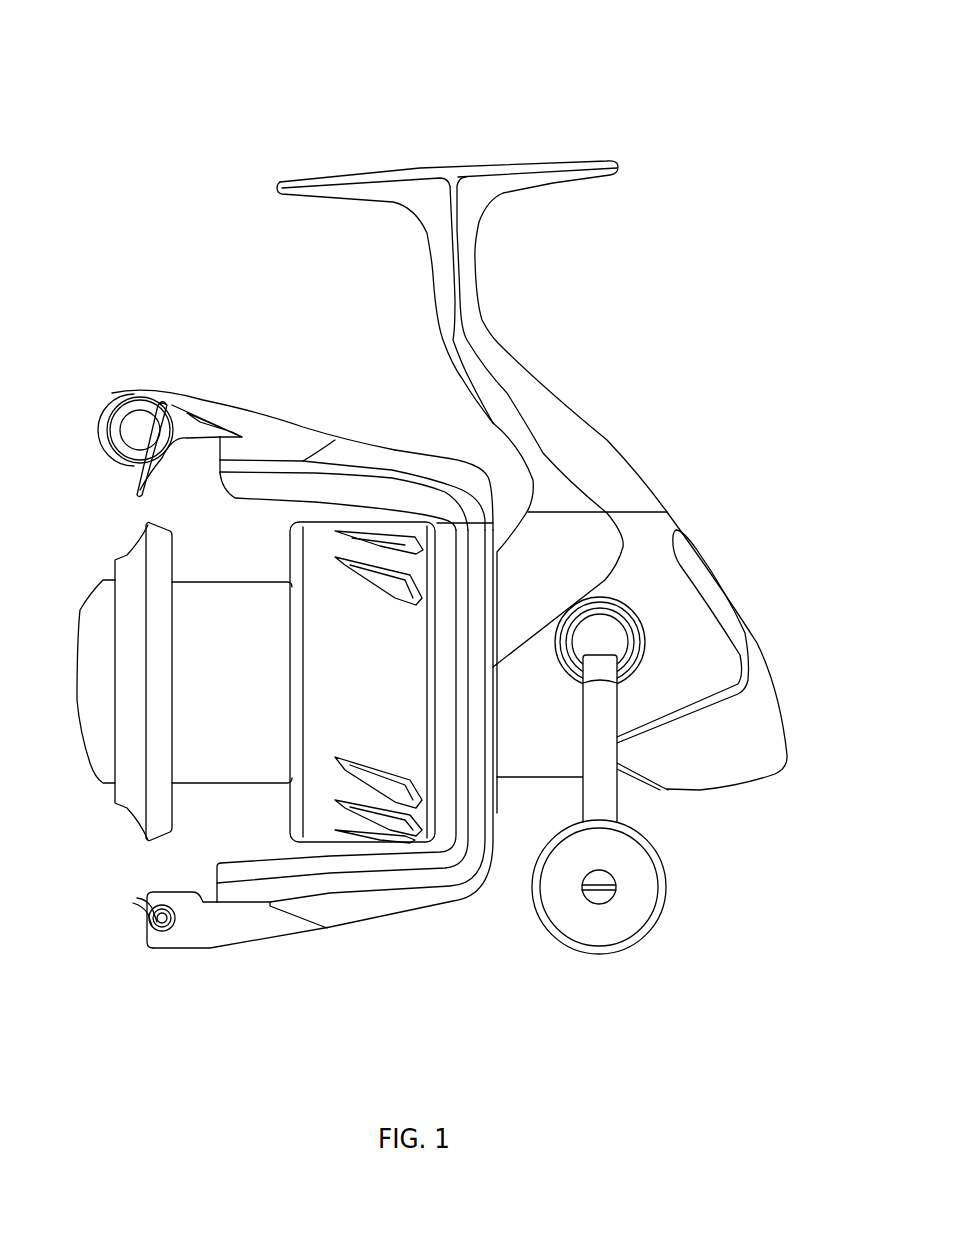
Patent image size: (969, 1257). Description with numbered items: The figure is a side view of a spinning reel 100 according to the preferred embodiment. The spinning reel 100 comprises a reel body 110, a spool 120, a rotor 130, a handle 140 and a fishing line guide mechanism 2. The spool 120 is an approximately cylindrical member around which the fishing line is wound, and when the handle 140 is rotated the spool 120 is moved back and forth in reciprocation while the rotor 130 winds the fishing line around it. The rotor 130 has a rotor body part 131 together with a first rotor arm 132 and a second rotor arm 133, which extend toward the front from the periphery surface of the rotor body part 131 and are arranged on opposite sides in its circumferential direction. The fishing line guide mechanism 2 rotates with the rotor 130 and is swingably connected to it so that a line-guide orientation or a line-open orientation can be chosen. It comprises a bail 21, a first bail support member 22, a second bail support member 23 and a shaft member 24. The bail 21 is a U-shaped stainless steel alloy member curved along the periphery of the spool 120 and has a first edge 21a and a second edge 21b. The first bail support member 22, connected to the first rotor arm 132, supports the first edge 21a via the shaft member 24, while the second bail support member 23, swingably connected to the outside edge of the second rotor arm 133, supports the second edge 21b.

The spinning reel 100 is at (680, 107).
The reel body 110 is at (668, 512).
The spool 120 is at (224, 579).
The rotor 130 is at (382, 447).
The rotor body part 131 is at (447, 822).
The first rotor arm 132 is at (418, 463).
The second rotor arm 133 is at (387, 915).
The handle 140 is at (618, 815).
The fishing line guide mechanism 2 is at (109, 381).
The bail 21 is at (128, 485).
The first edge 21a is at (115, 443).
The second edge 21b is at (138, 903).
The first bail support member 22 is at (222, 395).
The second bail support member 23 is at (212, 953).
The shaft member 24 is at (128, 427).